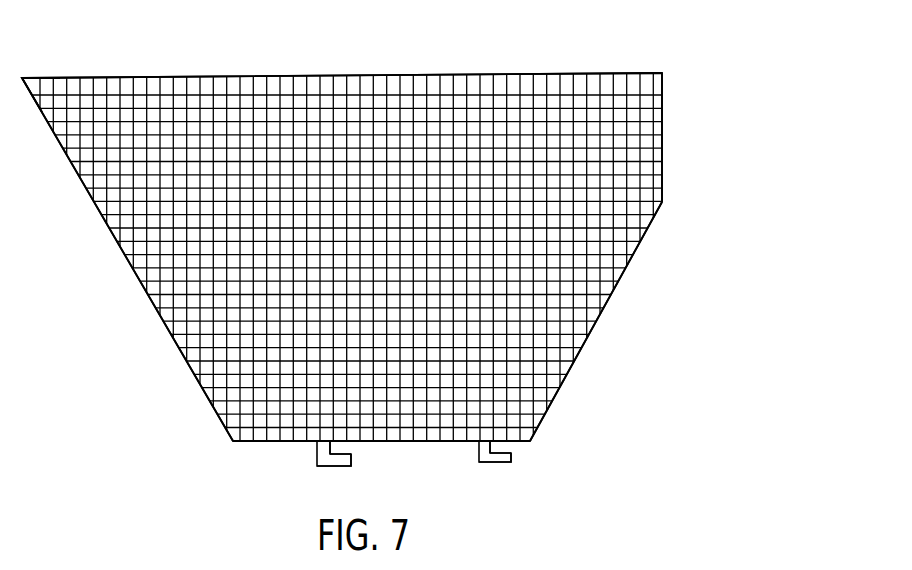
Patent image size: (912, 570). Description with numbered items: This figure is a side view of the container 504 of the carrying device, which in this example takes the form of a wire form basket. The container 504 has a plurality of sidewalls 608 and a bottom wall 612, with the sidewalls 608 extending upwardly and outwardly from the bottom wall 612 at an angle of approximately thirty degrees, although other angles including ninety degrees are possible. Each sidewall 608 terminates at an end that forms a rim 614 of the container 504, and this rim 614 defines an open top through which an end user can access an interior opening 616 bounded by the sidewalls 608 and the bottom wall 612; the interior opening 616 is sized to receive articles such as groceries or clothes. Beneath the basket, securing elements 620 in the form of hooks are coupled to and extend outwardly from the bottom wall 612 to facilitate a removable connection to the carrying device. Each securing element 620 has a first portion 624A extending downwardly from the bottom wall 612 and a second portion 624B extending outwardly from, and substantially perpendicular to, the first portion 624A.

The container 504 is at (693, 97).
The sidewalls 608 is at (133, 270).
The bottom wall 612 is at (392, 443).
The rim 614 is at (35, 79).
The interior opening 616 is at (437, 67).
The securing elements 620 is at (317, 452).
The first portion 624A is at (331, 456).
The second portion 624B is at (347, 465).